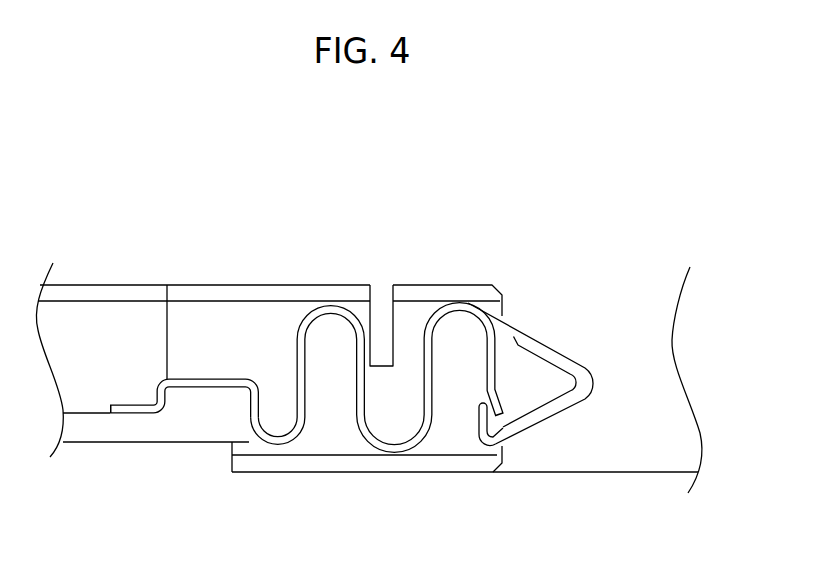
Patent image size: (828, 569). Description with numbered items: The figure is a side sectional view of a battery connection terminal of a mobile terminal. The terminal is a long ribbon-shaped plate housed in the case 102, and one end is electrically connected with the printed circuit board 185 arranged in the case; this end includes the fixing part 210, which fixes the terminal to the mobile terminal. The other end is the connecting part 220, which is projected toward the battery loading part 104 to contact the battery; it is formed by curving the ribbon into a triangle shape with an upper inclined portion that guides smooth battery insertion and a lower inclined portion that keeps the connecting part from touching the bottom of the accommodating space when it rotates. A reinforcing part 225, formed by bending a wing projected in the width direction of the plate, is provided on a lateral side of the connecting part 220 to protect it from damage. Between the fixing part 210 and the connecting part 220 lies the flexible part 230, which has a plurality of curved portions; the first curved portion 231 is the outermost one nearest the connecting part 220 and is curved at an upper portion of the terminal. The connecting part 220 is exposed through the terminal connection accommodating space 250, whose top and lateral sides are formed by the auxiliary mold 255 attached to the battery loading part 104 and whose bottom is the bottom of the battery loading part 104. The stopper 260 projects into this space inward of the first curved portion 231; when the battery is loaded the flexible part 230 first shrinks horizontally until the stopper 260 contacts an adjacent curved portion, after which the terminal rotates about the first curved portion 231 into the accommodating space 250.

The case 102 is at (118, 293).
The battery loading part 104 is at (663, 438).
The printed circuit board 185 is at (117, 431).
The fixing part 210 is at (197, 382).
The connecting part 220 is at (547, 348).
The reinforcing part 225 is at (567, 383).
The flexible part 230 is at (447, 460).
The first curved portion 231 is at (467, 305).
The terminal connection accommodating space 250 is at (450, 383).
The auxiliary mold 255 is at (277, 293).
The stopper 260 is at (383, 312).